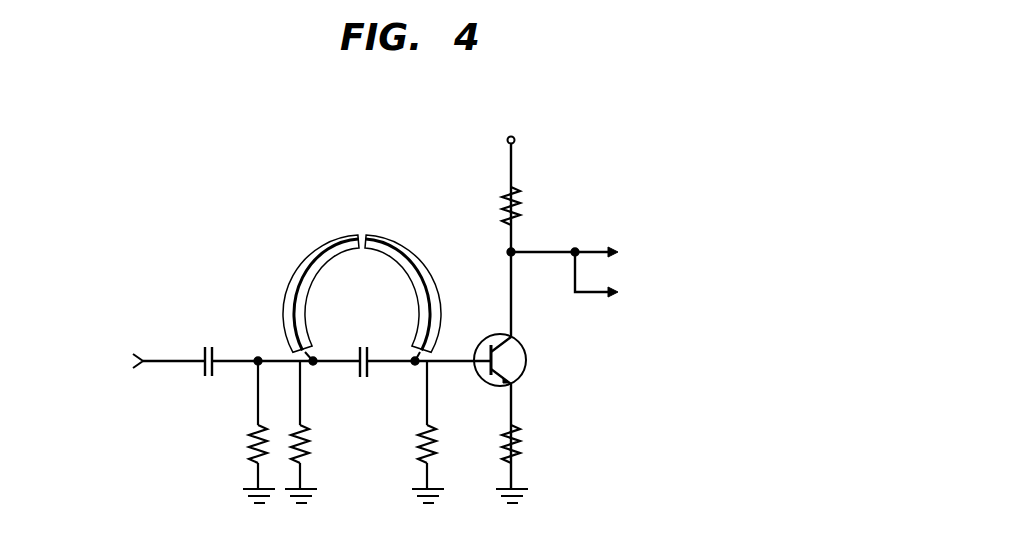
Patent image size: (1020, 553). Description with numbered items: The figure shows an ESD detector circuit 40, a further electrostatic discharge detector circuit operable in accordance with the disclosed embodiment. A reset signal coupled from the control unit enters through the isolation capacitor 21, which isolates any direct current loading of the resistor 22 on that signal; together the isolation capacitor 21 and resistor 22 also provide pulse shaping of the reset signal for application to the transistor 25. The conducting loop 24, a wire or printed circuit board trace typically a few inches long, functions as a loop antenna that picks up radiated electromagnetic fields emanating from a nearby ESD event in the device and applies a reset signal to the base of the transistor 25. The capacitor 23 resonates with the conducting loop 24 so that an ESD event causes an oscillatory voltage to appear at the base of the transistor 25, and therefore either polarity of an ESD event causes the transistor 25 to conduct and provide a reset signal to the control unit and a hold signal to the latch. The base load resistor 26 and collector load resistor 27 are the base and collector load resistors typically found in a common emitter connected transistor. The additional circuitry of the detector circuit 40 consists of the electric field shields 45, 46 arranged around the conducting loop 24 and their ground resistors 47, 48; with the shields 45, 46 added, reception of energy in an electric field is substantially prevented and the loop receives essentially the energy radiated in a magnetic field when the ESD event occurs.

The isolation capacitor 21 is at (209, 345).
The resistor 22 is at (252, 444).
The capacitor 23 is at (363, 380).
The conducting loop 24 is at (359, 273).
The transistor 25 is at (526, 362).
The base load resistor 26 is at (519, 443).
The collector load resistor 27 is at (519, 200).
The ESD detector circuit 40 is at (220, 211).
The electric field shield 45 is at (311, 247).
The electric field shield 46 is at (412, 241).
The ground resistor 47 is at (309, 440).
The ground resistor 48 is at (436, 443).